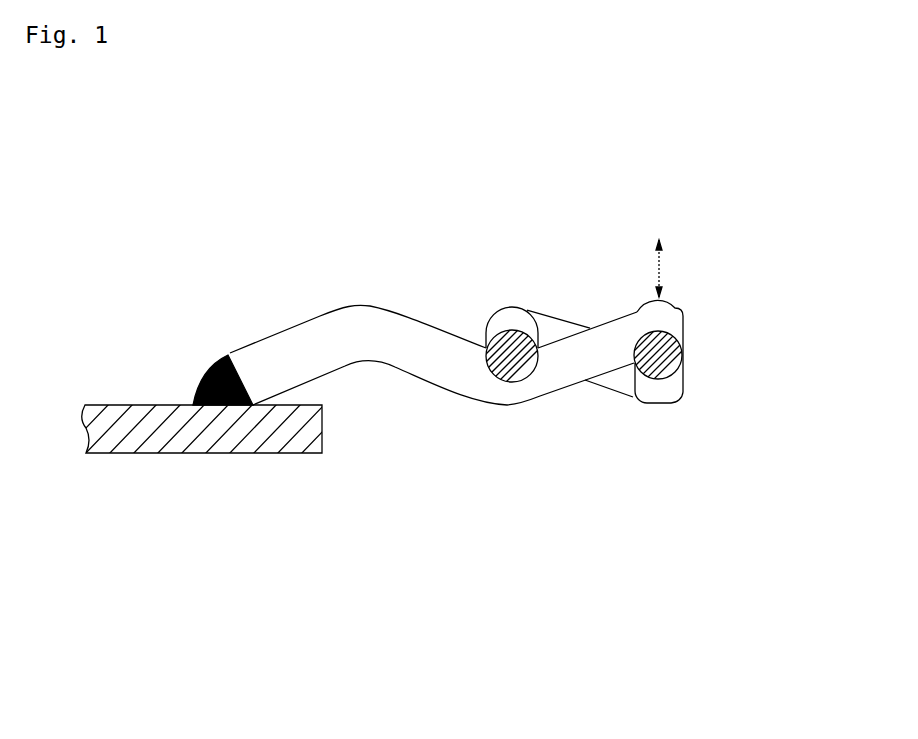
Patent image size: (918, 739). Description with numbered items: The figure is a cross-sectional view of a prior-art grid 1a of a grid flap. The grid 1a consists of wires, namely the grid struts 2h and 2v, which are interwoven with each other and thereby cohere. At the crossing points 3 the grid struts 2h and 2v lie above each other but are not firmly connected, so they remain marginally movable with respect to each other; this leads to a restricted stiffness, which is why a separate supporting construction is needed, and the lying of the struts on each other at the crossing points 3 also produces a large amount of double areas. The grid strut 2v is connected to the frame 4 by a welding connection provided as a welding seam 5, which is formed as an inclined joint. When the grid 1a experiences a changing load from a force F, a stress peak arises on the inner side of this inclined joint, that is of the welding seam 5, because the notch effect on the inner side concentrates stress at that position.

The grid 1a is at (545, 329).
The horizontal grid strut 2h is at (513, 307).
The vertical grid strut 2v is at (458, 367).
The crossing point 3 is at (515, 417).
The frame 4 is at (225, 413).
The welding seam 5 is at (227, 357).